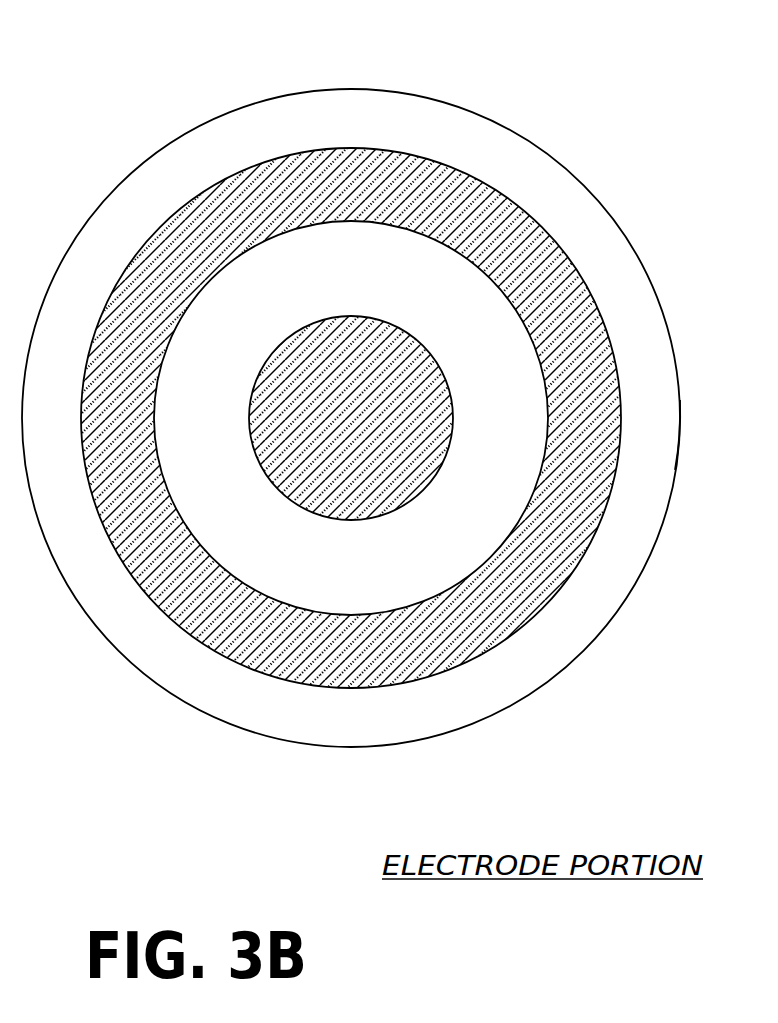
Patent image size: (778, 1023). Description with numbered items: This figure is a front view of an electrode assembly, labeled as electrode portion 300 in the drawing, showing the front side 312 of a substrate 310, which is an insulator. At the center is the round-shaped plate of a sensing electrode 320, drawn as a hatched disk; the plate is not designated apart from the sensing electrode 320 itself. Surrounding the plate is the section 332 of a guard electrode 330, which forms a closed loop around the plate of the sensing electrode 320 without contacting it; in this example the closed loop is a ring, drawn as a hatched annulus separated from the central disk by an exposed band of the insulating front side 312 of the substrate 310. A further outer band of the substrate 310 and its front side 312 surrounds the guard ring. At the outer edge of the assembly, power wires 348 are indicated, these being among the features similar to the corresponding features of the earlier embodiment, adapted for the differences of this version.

The electrode portion 300 is at (75, 84).
The substrate 310 is at (351, 418).
The front side 312 is at (391, 131).
The sensing electrode 320 is at (372, 411).
The guard electrode 330 is at (351, 418).
The section 332 is at (391, 196).
The power wires 348 is at (681, 432).